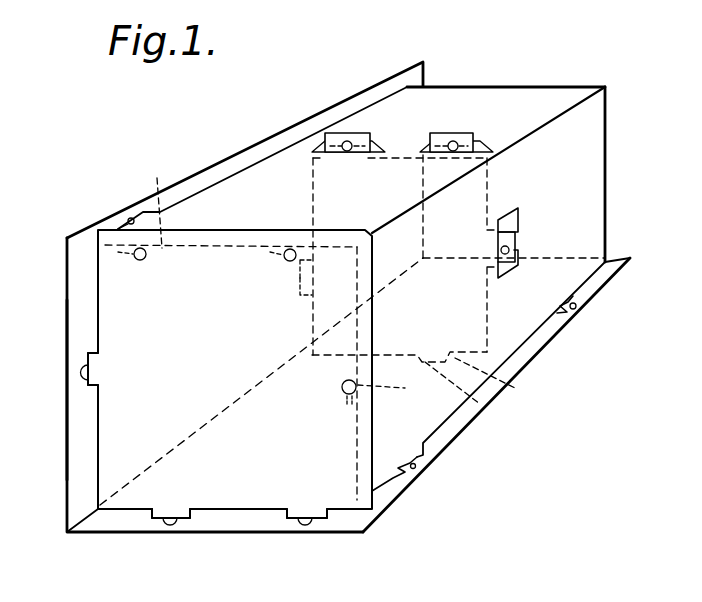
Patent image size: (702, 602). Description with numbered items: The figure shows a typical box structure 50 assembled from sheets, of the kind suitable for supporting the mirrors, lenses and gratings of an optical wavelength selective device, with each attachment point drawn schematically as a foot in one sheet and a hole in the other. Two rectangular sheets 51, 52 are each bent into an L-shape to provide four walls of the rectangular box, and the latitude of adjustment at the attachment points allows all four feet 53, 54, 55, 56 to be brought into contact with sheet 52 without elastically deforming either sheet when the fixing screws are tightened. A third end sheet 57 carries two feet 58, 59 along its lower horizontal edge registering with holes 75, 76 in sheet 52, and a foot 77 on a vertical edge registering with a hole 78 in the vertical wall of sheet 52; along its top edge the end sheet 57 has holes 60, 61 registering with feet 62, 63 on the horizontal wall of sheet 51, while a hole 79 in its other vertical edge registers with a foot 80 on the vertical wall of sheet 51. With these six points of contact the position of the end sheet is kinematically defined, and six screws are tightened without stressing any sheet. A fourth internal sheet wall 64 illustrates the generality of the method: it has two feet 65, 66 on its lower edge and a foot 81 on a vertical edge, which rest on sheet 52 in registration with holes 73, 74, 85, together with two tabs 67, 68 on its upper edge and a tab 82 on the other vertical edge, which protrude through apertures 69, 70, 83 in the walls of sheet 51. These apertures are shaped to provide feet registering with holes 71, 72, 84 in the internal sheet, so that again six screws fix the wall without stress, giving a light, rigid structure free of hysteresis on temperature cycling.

The box structure 50 is at (560, 79).
The rectangular sheet 51 is at (593, 138).
The rectangular sheet 52 is at (617, 262).
The foot 53 is at (577, 294).
The foot 54 is at (407, 472).
The foot 55 is at (352, 138).
The foot 56 is at (128, 222).
The end sheet 57 is at (120, 503).
The foot 58 is at (183, 513).
The foot 59 is at (318, 515).
The hole 60 is at (142, 260).
The hole 61 is at (290, 248).
The foot 62 is at (156, 202).
The foot 63 is at (272, 222).
The internal sheet wall 64 is at (487, 308).
The foot 65 is at (312, 355).
The foot 66 is at (498, 379).
The tab 67 is at (330, 137).
The tab 68 is at (467, 130).
The aperture 69 is at (378, 137).
The aperture 70 is at (488, 133).
The hole 71 is at (352, 145).
The hole 72 is at (453, 147).
The hole 73 is at (323, 380).
The hole 74 is at (469, 398).
The hole 75 is at (168, 523).
The hole 76 is at (305, 525).
The foot 77 is at (92, 377).
The hole 78 is at (90, 375).
The hole 79 is at (355, 392).
The foot 80 is at (395, 389).
The foot 81 is at (300, 296).
The tab 82 is at (518, 238).
The aperture 83 is at (515, 212).
The hole 84 is at (508, 252).
The hole 85 is at (298, 278).